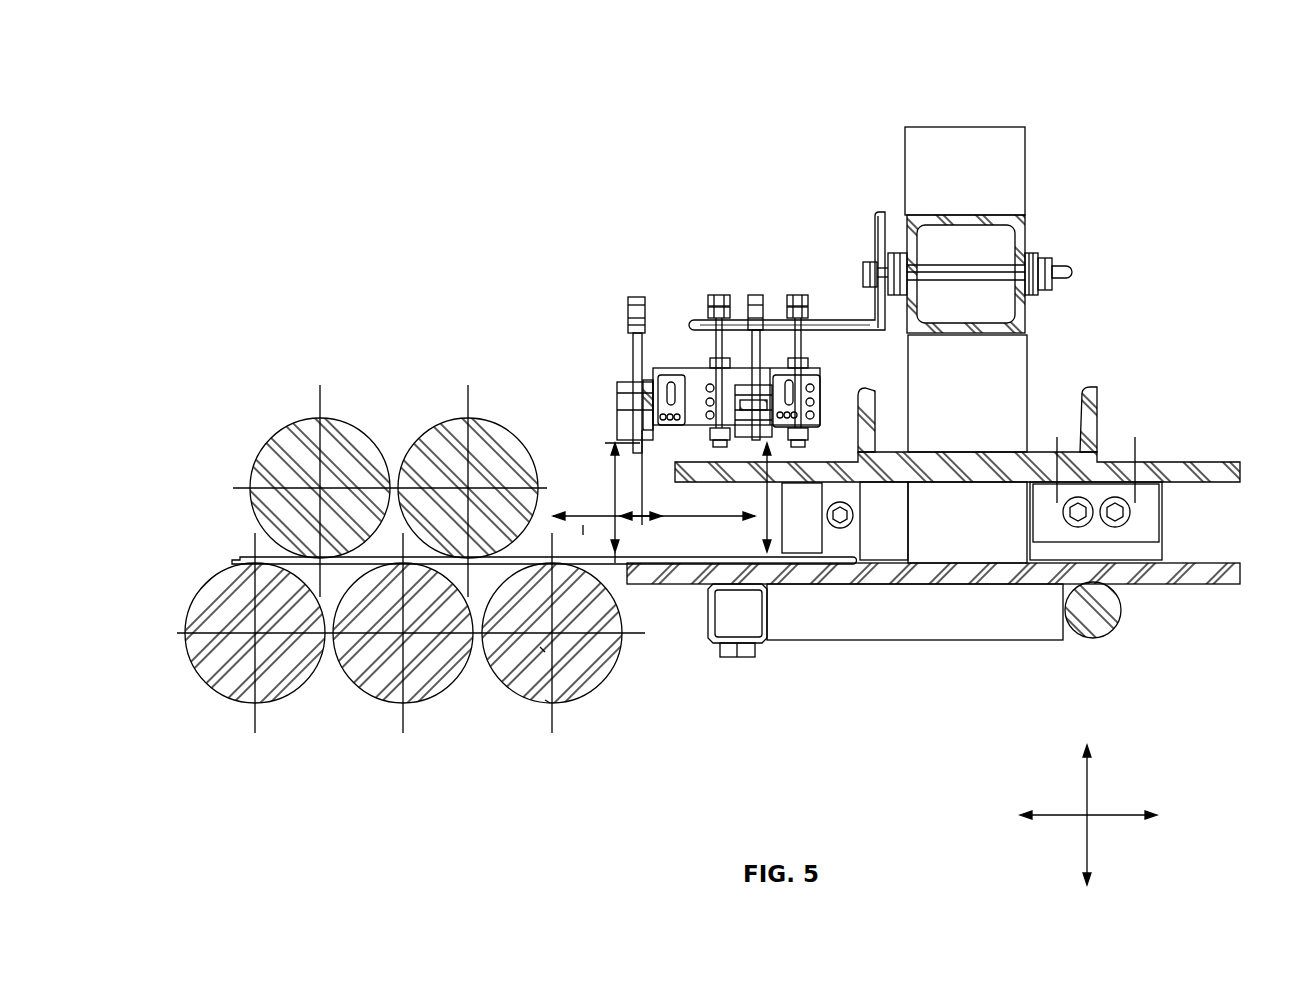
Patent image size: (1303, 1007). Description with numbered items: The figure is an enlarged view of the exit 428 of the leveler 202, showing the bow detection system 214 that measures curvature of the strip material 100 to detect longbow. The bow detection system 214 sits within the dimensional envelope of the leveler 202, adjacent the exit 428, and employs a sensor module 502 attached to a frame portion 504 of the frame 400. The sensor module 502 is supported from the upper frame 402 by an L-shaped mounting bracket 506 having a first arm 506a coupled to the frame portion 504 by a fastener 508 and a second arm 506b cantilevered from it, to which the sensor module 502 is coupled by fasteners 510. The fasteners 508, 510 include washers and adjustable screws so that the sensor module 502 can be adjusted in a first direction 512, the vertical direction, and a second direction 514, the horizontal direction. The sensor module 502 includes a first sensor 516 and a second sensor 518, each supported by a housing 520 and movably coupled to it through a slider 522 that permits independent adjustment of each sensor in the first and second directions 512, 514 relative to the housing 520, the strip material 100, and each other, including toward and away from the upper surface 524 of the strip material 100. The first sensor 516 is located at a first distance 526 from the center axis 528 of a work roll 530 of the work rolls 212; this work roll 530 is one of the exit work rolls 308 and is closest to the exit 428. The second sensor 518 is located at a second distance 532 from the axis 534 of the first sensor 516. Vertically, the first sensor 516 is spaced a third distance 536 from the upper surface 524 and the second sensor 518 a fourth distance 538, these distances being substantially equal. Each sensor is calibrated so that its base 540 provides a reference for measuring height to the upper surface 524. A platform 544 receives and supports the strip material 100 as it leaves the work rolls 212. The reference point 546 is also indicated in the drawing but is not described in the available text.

The strip material 100 is at (268, 553).
The leveler 202 is at (494, 208).
The work rolls 212 is at (386, 700).
The bow detection system 214 is at (697, 190).
The exit work rolls 308 is at (351, 366).
The frame 400 is at (1073, 58).
The upper frame 402 is at (1025, 165).
The exit 428 is at (1148, 353).
The sensor module 502 is at (683, 368).
The frame portion 504 is at (1022, 228).
The mounting bracket 506 is at (872, 318).
The first arm 506a is at (882, 211).
The second arm 506b is at (697, 320).
The fastener 508 is at (1072, 274).
The fasteners 510 is at (797, 293).
The first direction 512 is at (1088, 792).
The second direction 514 is at (1058, 812).
The first sensor 516 is at (628, 316).
The second sensor 518 is at (763, 352).
The housing 520 is at (820, 393).
The slider 522 is at (662, 376).
The upper surface 524 is at (800, 548).
The first distance 526 is at (585, 527).
The center axis 528 is at (540, 648).
The work roll 530 is at (545, 703).
The second distance 532 is at (678, 517).
The axis 534 is at (645, 483).
The third distance 536 is at (612, 468).
The fourth distance 538 is at (850, 528).
The base 540 is at (617, 405).
The platform 544 is at (928, 576).
The reference point 546 is at (615, 565).